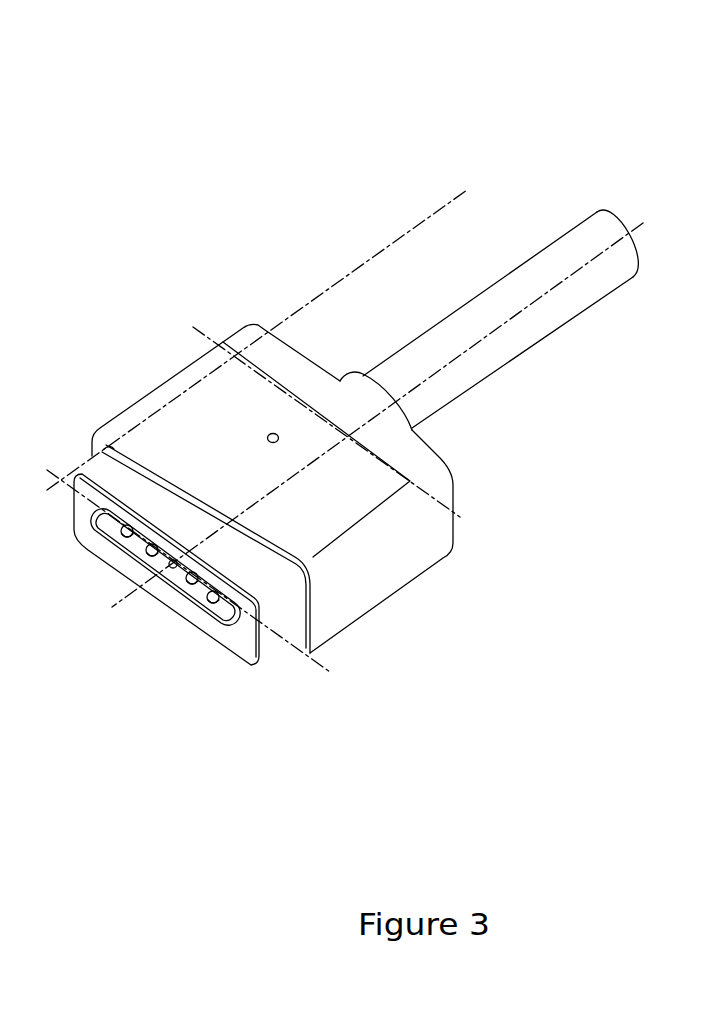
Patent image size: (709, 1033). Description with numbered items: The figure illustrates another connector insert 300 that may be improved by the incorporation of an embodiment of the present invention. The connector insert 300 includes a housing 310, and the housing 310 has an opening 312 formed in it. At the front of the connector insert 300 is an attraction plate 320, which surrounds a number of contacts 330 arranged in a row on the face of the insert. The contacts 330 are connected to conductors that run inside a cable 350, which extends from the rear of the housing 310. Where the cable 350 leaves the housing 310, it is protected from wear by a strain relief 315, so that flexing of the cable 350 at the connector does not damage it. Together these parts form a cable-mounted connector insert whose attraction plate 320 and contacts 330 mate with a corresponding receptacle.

The connector insert 300 is at (346, 377).
The housing 310 is at (197, 438).
The opening 312 is at (273, 427).
The strain relief 315 is at (373, 398).
The attraction plate 320 is at (272, 610).
The contacts 330 is at (130, 537).
The cable 350 is at (533, 332).